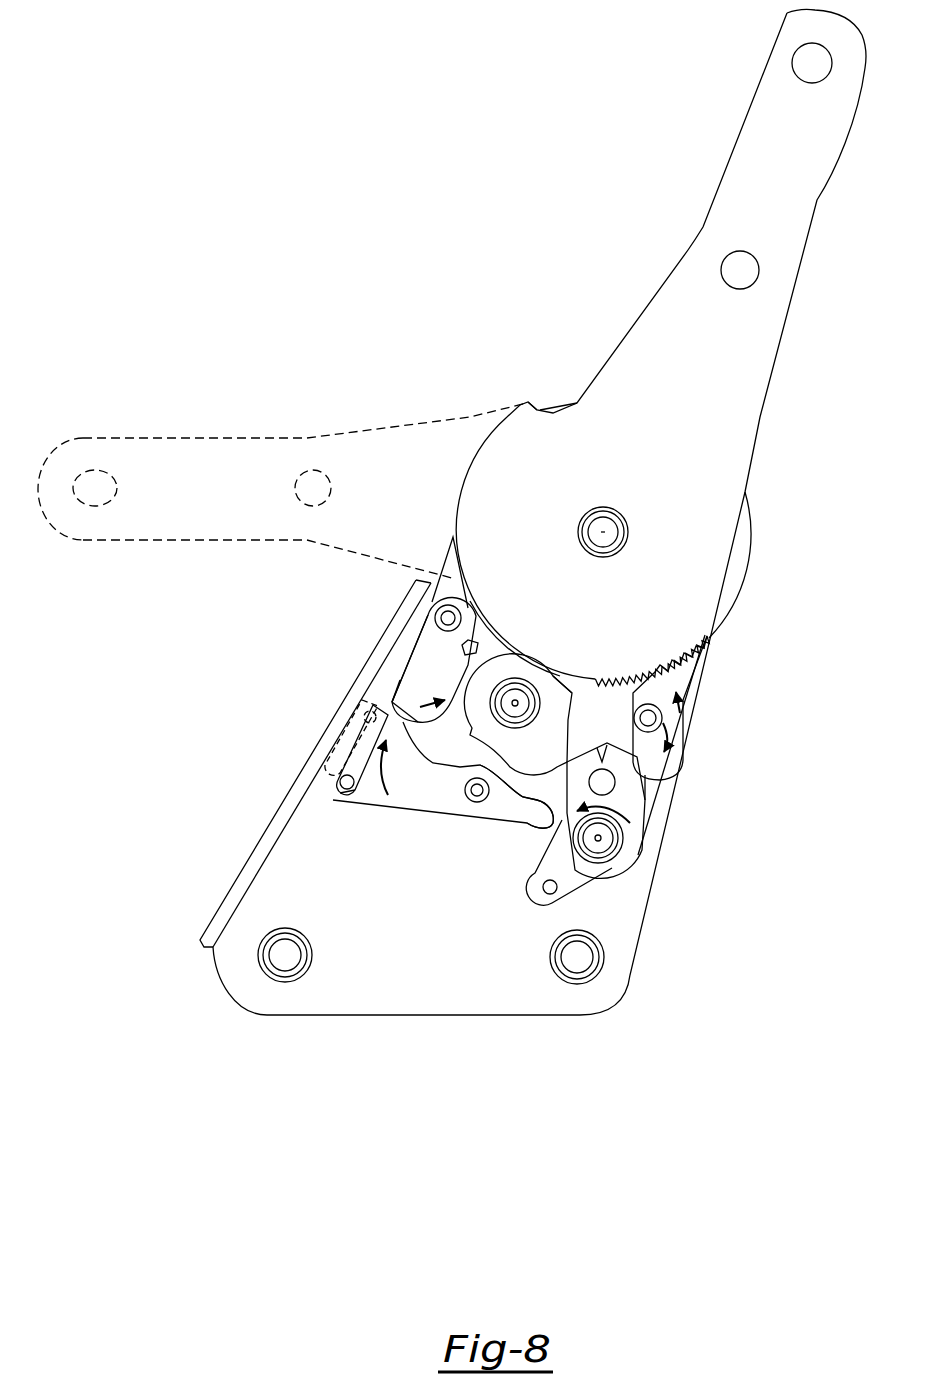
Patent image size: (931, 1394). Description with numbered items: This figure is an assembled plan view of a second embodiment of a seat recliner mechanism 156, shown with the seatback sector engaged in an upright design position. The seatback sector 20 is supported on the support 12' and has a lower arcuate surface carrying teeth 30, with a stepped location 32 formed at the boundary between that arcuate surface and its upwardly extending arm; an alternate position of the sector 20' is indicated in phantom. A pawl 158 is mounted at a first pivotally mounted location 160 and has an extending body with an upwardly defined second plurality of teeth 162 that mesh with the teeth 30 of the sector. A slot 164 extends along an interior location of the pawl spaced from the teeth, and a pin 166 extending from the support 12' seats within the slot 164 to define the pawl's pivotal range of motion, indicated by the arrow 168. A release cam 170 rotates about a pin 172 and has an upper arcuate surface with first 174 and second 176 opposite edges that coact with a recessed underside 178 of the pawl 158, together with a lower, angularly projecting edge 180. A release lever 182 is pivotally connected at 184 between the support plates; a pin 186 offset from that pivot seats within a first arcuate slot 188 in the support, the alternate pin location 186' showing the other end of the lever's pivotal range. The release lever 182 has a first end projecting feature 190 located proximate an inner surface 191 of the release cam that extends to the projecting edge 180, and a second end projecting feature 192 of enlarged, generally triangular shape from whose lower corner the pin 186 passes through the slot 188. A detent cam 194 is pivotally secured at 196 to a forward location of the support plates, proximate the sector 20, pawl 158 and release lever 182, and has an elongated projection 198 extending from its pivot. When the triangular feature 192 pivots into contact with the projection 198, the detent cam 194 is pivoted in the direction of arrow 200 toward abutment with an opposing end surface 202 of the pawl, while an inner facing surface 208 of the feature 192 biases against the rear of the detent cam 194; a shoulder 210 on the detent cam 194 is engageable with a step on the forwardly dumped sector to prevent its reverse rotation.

The support 12' is at (472, 773).
The seatback sector 20 is at (690, 250).
The seatback sector 20' is at (282, 472).
The teeth 30 is at (700, 661).
The stepped location 32 is at (540, 407).
The seat recliner mechanism 156 is at (478, 230).
The pawl 158 is at (573, 693).
The first pivotally mounted location 160 is at (517, 703).
The second plurality of teeth 162 is at (681, 678).
The slot 164 is at (670, 687).
The pin 166 is at (678, 735).
The arrow 168 is at (680, 720).
The release cam 170 is at (632, 830).
The pin 172 is at (600, 760).
The first edge 174 is at (653, 783).
The second edge 176 is at (567, 762).
The recessed underside 178 is at (602, 760).
The angularly projecting edge 180 is at (538, 893).
The release lever 182 is at (403, 798).
The pivotal connection 184 is at (463, 795).
The pin 186 is at (327, 750).
The pin location 186' is at (333, 725).
The first arcuate slot 188 is at (345, 745).
The first end projecting feature 190 is at (537, 810).
The inner surface 191 is at (573, 863).
The second end projecting feature 192 is at (357, 793).
The detent cam 194 is at (432, 635).
The pivot 196 is at (440, 606).
The elongated projection 198 is at (385, 685).
The directional arrow 200 is at (393, 668).
The opposing end surface 202 is at (476, 643).
The inner facing surface 208 is at (677, 809).
The shoulder 210 is at (502, 645).